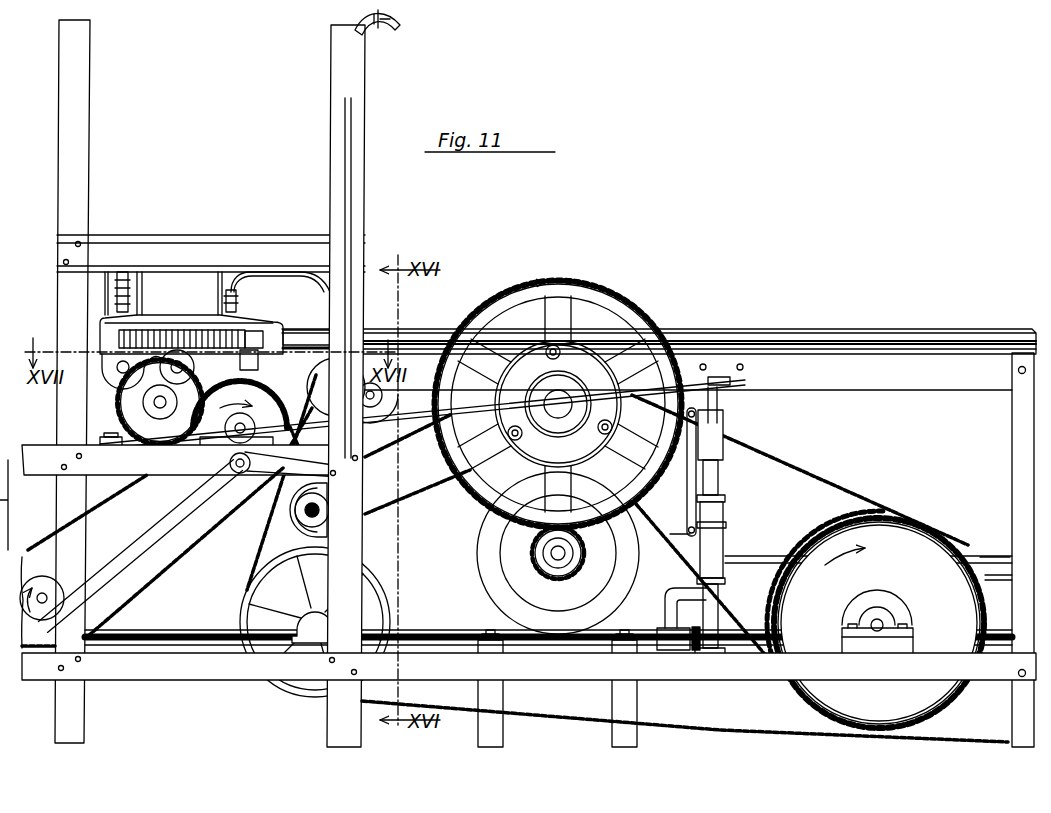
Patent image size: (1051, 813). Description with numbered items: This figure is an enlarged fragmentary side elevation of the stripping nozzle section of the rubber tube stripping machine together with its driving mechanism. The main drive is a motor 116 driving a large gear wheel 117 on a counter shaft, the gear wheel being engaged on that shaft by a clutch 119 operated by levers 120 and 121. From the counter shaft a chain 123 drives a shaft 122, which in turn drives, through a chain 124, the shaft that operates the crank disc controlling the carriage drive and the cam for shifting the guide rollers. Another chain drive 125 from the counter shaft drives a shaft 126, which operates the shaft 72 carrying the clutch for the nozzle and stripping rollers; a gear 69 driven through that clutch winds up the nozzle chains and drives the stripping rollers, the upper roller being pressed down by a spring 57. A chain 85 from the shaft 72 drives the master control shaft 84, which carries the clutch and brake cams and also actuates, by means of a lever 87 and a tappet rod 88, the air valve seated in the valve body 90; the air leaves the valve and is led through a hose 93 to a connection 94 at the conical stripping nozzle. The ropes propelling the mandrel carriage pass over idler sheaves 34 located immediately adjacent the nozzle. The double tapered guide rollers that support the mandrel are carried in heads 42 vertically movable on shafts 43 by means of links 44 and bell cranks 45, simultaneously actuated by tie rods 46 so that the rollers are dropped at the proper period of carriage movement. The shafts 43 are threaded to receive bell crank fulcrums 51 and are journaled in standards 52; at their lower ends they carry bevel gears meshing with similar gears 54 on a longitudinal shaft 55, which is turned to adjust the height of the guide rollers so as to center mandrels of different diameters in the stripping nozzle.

The idler sheaves 34 is at (324, 374).
The heads 42 is at (722, 425).
The shafts 43 is at (718, 478).
The links 44 is at (688, 465).
The bell cranks 45 is at (670, 534).
The tie rods 46 is at (740, 560).
The bell crank fulcrums 51 is at (718, 540).
The standards 52 is at (676, 592).
The gears 54 is at (696, 652).
The longitudinal shaft 55 is at (248, 600).
The spring 57 is at (117, 290).
The gear 69 is at (192, 368).
The shaft 72 is at (250, 425).
The master control shaft 84 is at (42, 610).
The chain 85 is at (126, 584).
The lever 87 is at (150, 540).
The tappet rod 88 is at (352, 200).
The valve body 90 is at (340, 64).
The hose 93 is at (312, 282).
The connection 94 is at (226, 302).
The motor 116 is at (558, 553).
The gear wheel 117 is at (620, 300).
The clutch 119 is at (562, 378).
The lever 120 is at (420, 417).
The lever 121 is at (110, 437).
The shaft 122 is at (885, 618).
The chain 123 is at (798, 478).
The chain 124 is at (1000, 556).
The chain drive 125 is at (440, 495).
The shaft 126 is at (308, 518).